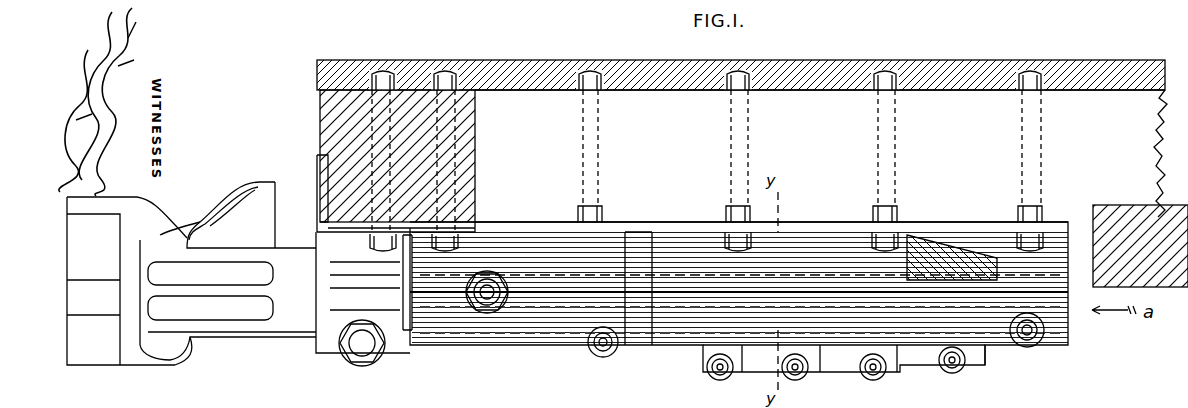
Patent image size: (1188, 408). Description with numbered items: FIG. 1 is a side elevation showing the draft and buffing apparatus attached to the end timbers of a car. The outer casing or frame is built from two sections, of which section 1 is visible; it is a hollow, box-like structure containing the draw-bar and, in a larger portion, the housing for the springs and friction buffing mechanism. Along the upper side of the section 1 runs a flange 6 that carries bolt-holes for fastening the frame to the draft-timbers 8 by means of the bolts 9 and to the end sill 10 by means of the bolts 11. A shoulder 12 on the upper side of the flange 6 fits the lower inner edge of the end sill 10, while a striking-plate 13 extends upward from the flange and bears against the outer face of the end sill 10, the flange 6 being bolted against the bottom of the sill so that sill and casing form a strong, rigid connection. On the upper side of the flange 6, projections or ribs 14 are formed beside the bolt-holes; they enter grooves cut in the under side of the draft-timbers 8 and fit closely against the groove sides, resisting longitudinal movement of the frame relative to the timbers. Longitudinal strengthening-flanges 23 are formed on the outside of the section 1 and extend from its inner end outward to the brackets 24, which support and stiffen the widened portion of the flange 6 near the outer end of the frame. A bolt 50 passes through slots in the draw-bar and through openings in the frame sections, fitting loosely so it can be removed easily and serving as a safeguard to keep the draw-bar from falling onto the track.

The section of outer casing or frame 1 is at (550, 338).
The flange 6 is at (666, 222).
The draft-timbers 8 is at (820, 124).
The bolts 9 is at (746, 240).
The end sill 10 is at (397, 156).
The bolts 11 is at (449, 72).
The shoulder 12 is at (478, 222).
The striking-plate 13 is at (322, 178).
The projections or ribs 14 is at (578, 212).
The longitudinal strengthening-flanges 23 is at (568, 276).
The brackets 24 is at (402, 292).
The bolt 50 is at (486, 298).